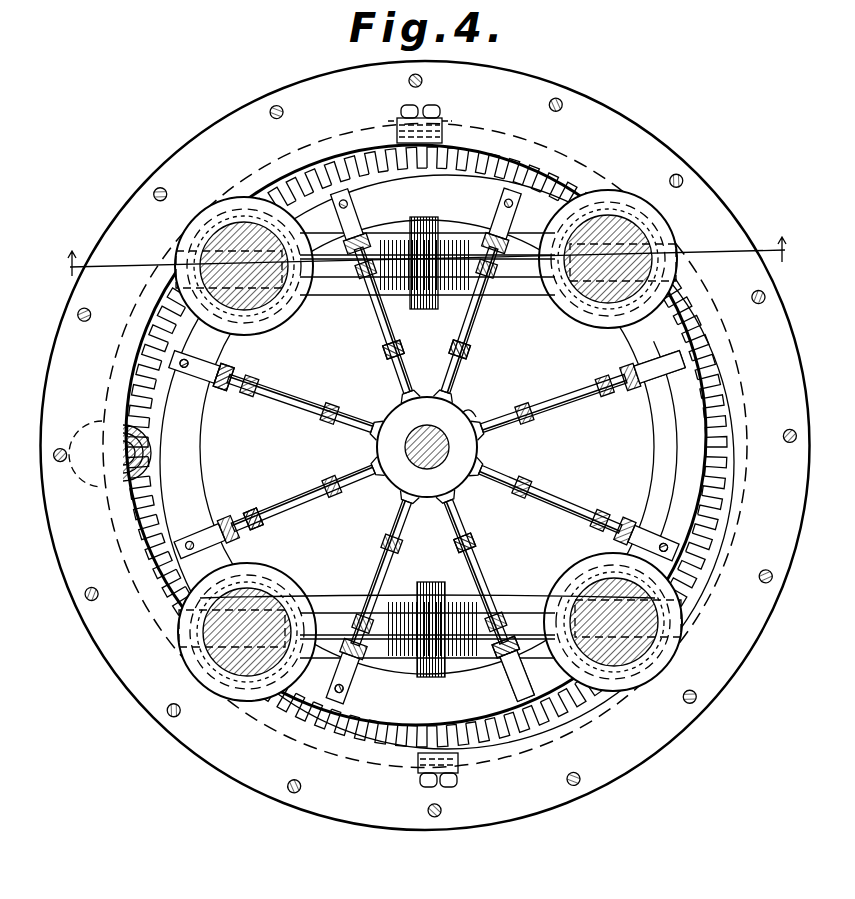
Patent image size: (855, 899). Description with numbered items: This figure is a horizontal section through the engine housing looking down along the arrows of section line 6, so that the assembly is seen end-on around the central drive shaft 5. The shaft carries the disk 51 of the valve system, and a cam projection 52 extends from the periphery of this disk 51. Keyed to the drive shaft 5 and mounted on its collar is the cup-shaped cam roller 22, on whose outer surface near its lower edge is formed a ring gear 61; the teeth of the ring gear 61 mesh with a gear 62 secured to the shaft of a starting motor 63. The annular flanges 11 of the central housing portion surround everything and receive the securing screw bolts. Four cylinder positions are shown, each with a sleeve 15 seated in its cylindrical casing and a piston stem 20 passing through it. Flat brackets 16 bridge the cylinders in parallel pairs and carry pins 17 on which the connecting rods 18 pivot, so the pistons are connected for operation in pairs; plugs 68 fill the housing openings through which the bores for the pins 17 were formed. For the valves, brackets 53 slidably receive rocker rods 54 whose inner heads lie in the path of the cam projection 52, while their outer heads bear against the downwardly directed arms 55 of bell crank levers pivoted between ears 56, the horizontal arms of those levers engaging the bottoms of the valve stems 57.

The drive shaft 5 is at (430, 447).
The collar 6 is at (427, 259).
The annular flanges 11 is at (628, 756).
The sleeves 15 is at (580, 580).
The flat brackets 16 is at (525, 610).
The pins 17 is at (428, 582).
The connecting rods 18 is at (345, 615).
The stems 20 is at (660, 632).
The cam roller 22 is at (203, 495).
The disk 51 is at (460, 475).
The cam projection 52 is at (470, 410).
The brackets 53 is at (262, 518).
The rocker rods 54 is at (470, 548).
The downwardly directed arms 55 is at (512, 678).
The ears 56 is at (504, 656).
The stems 57 is at (345, 688).
The ring gear 61 is at (560, 720).
The gear 62 is at (125, 445).
The motor 63 is at (145, 450).
The plugs 68 is at (432, 122).